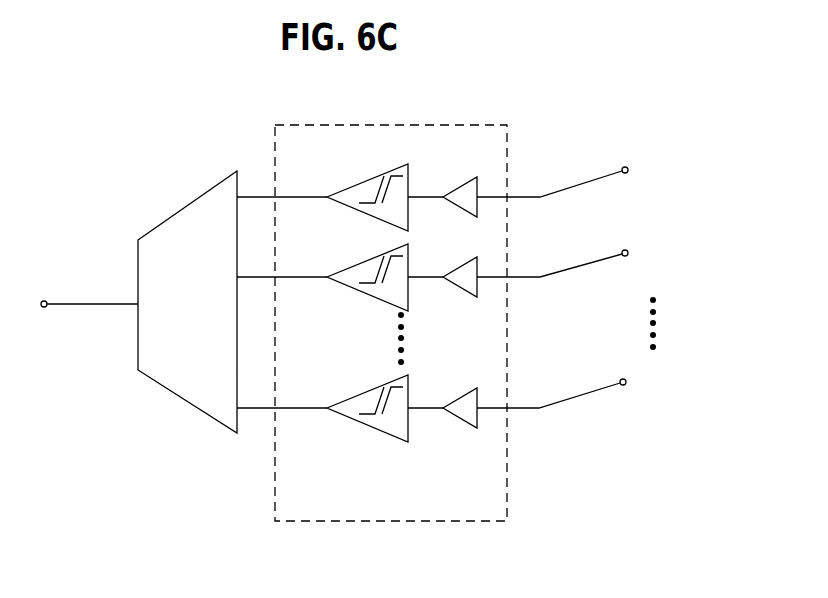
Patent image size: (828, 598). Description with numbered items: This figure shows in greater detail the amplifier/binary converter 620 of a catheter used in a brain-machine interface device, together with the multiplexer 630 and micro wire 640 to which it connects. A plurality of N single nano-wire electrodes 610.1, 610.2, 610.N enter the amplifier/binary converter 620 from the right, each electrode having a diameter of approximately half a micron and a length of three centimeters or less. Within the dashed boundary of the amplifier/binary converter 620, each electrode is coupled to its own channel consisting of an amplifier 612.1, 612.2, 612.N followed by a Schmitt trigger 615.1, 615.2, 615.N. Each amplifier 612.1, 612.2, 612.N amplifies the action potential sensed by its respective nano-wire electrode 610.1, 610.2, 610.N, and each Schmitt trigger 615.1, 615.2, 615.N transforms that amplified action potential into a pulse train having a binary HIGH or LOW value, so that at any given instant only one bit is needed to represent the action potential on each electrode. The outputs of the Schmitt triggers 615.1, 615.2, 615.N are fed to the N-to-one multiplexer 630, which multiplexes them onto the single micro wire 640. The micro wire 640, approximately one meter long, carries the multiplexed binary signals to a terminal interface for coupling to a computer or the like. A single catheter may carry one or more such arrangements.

The micro wire 640 is at (96, 304).
The multiplexer 630 is at (197, 228).
The amplifier/binary converter 620 is at (445, 124).
The Schmitt trigger 615.1 is at (370, 192).
The Schmitt trigger 615.2 is at (364, 272).
The Schmitt trigger 615.N is at (367, 403).
The amplifier 612.1 is at (472, 202).
The amplifier 612.2 is at (466, 284).
The amplifier 612.N is at (460, 403).
The nano-wire electrode 610.1 is at (584, 178).
The nano-wire electrode 610.2 is at (584, 259).
The nano-wire electrode 610.N is at (583, 389).